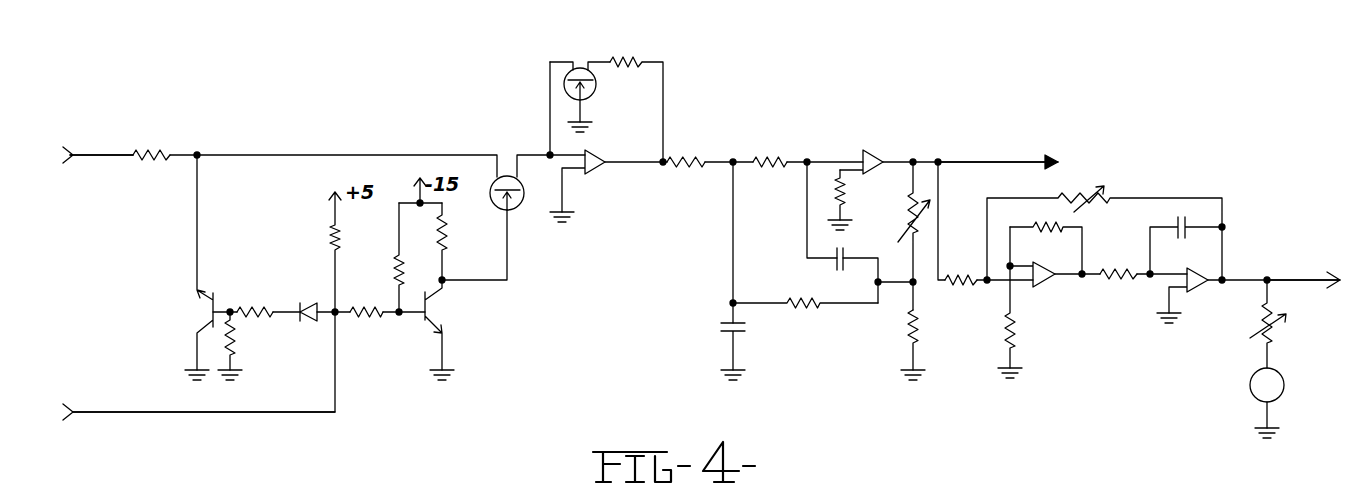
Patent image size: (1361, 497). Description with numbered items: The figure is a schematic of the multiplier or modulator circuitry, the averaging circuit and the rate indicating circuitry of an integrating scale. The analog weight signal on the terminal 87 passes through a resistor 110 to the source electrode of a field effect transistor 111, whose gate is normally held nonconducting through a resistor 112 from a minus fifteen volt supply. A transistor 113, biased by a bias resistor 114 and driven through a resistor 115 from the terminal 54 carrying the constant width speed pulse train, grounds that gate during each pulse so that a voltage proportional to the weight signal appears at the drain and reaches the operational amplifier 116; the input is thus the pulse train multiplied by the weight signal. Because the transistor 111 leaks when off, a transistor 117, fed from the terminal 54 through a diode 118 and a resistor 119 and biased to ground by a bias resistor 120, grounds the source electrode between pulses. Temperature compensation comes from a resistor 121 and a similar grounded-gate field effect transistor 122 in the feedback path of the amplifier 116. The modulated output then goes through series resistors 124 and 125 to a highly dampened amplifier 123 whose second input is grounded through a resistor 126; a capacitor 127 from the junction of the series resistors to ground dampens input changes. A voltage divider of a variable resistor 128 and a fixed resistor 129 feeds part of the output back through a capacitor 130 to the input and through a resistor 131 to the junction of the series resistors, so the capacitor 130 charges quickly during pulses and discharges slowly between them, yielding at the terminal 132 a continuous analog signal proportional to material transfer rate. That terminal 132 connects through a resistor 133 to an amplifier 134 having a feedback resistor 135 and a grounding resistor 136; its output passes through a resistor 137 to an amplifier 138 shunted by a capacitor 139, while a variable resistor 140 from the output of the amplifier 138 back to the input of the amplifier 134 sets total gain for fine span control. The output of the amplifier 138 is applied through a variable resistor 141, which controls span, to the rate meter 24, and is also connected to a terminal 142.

The terminal 87 is at (102, 150).
The resistor 110 is at (158, 152).
The transistor 117 is at (238, 292).
The diode 118 is at (310, 301).
The resistor 119 is at (255, 318).
The bias resistor 120 is at (238, 346).
The terminal 54 is at (85, 416).
The resistor 115 is at (352, 318).
The bias resistor 114 is at (396, 270).
The resistor 112 is at (445, 233).
The transistor 113 is at (420, 335).
The field effect transistor 111 is at (512, 210).
The operational amplifier 116 is at (590, 176).
The resistor 121 is at (645, 62).
The field effect transistor 122 is at (597, 93).
The resistor 124 is at (705, 166).
The resistor 125 is at (780, 160).
The amplifier 123 is at (886, 158).
The resistor 126 is at (848, 194).
The variable resistor 128 is at (908, 230).
The capacitor 130 is at (834, 270).
The resistor 131 is at (788, 312).
The capacitor 127 is at (722, 332).
The fixed resistor 129 is at (908, 337).
The terminal 132 is at (1020, 162).
The resistor 133 is at (941, 285).
The variable resistor 140 is at (1064, 198).
The feedback resistor 135 is at (1028, 231).
The amplifier 134 is at (1036, 286).
The resistor 136 is at (1007, 334).
The resistor 137 is at (1101, 285).
The capacitor 139 is at (1175, 223).
The amplifier 138 is at (1191, 290).
The terminal 142 is at (1320, 278).
The variable resistor 141 is at (1277, 326).
The rate meter 24 is at (1283, 375).